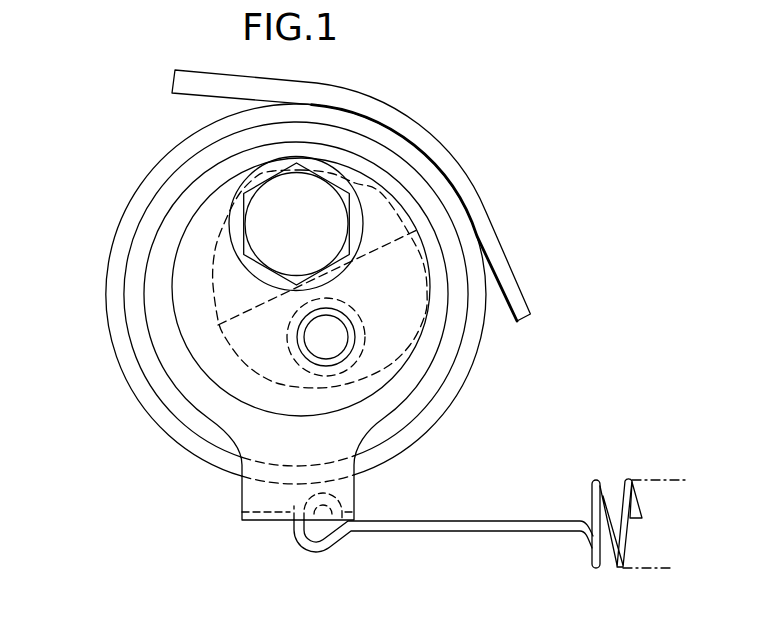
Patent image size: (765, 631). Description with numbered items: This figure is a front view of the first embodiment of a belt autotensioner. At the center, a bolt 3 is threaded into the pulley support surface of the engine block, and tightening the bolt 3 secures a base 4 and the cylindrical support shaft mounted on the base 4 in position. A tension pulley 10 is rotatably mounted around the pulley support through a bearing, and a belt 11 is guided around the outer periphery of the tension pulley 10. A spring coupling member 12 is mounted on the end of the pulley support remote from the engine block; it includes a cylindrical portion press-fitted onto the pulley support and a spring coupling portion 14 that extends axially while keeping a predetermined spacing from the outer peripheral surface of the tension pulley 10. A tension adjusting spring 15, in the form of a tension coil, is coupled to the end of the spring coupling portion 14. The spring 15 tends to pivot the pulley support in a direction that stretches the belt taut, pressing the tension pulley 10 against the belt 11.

The bolt 3 is at (320, 197).
The base 4 is at (427, 262).
The tension pulley 10 is at (133, 213).
The belt 11 is at (515, 296).
The spring coupling member 12 is at (170, 352).
The spring coupling portion 14 is at (249, 524).
The tension adjusting spring 15 is at (630, 482).